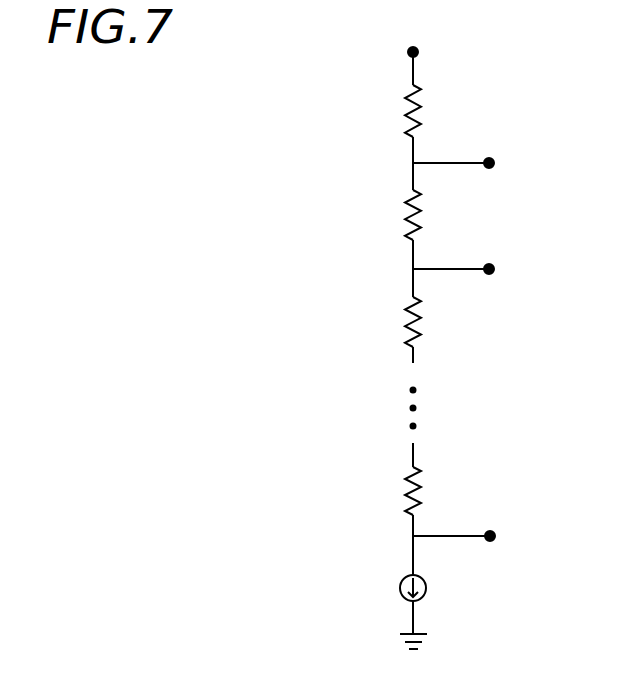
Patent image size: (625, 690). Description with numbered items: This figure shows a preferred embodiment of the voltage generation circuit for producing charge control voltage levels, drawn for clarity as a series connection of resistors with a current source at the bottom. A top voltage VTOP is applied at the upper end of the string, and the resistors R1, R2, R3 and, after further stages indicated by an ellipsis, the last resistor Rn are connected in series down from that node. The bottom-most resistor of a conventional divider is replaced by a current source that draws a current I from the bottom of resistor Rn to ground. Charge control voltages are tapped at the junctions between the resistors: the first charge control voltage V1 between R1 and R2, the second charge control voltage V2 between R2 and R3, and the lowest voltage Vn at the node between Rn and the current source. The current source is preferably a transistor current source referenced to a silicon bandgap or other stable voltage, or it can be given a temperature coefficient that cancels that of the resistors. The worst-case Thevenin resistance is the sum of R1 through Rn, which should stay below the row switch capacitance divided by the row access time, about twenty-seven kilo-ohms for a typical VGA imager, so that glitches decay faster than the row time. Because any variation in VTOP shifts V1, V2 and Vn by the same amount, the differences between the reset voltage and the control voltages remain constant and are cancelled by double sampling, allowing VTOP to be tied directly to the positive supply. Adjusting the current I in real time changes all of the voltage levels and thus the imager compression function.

The first resistor R1 is at (389, 111).
The second resistor R2 is at (389, 215).
The third resistor R3 is at (389, 322).
The nth resistor Rn is at (380, 491).
The top voltage VTOP is at (447, 41).
The first charge control voltage V1 is at (471, 166).
The second charge control voltage V2 is at (471, 272).
The nth charge control voltage Vn is at (470, 539).
The current source current I is at (457, 598).